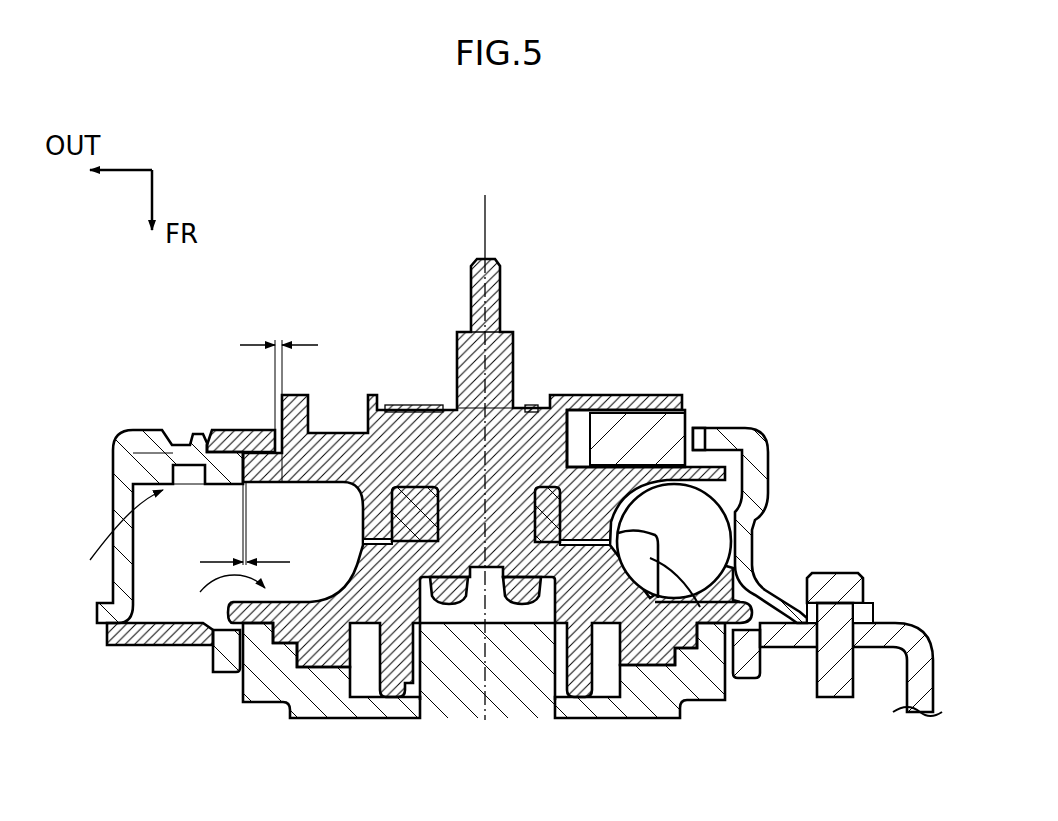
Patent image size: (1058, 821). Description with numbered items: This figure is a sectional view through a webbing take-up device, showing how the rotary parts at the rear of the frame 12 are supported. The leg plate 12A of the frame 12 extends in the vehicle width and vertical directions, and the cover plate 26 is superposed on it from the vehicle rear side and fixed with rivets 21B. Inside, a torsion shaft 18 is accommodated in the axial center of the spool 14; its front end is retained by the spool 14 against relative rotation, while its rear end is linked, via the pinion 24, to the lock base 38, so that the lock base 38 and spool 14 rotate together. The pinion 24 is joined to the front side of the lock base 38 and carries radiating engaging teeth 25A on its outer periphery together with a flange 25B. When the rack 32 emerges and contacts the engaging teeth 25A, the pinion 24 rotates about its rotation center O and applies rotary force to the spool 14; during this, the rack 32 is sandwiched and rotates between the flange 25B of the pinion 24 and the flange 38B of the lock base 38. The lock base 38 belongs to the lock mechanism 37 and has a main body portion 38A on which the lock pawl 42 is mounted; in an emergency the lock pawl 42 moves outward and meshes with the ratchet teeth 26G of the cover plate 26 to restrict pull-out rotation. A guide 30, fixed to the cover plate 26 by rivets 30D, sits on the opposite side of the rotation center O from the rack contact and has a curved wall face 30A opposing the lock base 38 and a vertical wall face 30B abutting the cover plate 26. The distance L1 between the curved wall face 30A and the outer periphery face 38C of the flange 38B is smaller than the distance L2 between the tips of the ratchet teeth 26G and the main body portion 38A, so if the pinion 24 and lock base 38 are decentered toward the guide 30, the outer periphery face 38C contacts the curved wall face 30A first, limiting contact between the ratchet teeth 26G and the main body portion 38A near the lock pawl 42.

The frame 12 is at (927, 620).
The leg plate 12A is at (931, 682).
The spool 14 is at (640, 695).
The torsion shaft 18 is at (503, 694).
The rivets 21B is at (836, 580).
The pinion 24 is at (205, 625).
The engaging teeth 25A is at (692, 650).
The flange 25B is at (212, 632).
The cover plate 26 is at (756, 428).
The ratchet teeth 26G is at (243, 472).
The guide 30 is at (112, 548).
The curved wall face 30A is at (201, 475).
The vertical wall face 30B is at (135, 462).
The rivets 30D is at (183, 438).
The rack 32 is at (735, 497).
The lock mechanism 37 is at (646, 309).
The lock base 38 is at (520, 352).
The main body portion 38A is at (295, 413).
The flange 38B is at (271, 477).
The outer periphery face 38C is at (238, 440).
The lock pawl 42 is at (635, 418).
The rotation center O is at (485, 215).
The distance L1 is at (252, 509).
The distance L2 is at (300, 343).